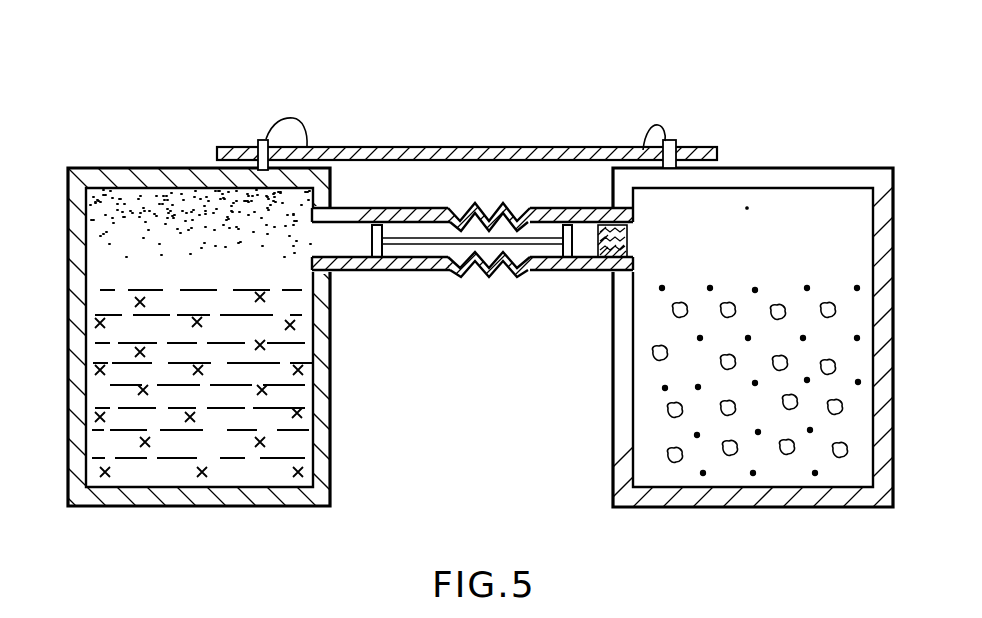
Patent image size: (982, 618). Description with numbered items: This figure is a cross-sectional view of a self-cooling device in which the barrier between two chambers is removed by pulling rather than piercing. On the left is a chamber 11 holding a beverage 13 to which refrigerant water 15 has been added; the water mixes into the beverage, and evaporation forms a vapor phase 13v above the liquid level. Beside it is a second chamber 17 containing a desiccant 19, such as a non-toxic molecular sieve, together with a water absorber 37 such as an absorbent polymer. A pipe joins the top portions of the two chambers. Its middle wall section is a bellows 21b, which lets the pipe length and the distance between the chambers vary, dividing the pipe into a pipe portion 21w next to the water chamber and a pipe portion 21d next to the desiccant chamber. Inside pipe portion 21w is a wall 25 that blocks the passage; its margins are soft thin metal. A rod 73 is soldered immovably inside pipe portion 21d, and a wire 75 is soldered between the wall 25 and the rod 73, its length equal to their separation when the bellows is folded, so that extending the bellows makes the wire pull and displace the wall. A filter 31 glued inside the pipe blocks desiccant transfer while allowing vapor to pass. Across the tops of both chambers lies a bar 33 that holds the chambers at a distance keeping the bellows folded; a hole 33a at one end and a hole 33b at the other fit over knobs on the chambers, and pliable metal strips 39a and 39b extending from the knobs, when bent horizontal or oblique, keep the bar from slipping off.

The chamber 11 is at (333, 477).
The beverage 13 is at (207, 290).
The vapor phase 13v is at (181, 222).
The water 15 is at (200, 472).
The chamber 17 is at (617, 432).
The desiccant 19 is at (830, 303).
The pipe portion 21w is at (353, 272).
The bellows 21b is at (503, 275).
The pipe portion 21d is at (593, 273).
The wall 25 is at (354, 208).
The filter 31 is at (628, 240).
The bar 33 is at (430, 147).
The hole 33a is at (252, 153).
The hole 33b is at (650, 153).
The water absorber 37 is at (755, 288).
The metal strip 39a is at (293, 118).
The metal strip 39b is at (663, 126).
The rod 73 is at (593, 208).
The wire 75 is at (480, 228).